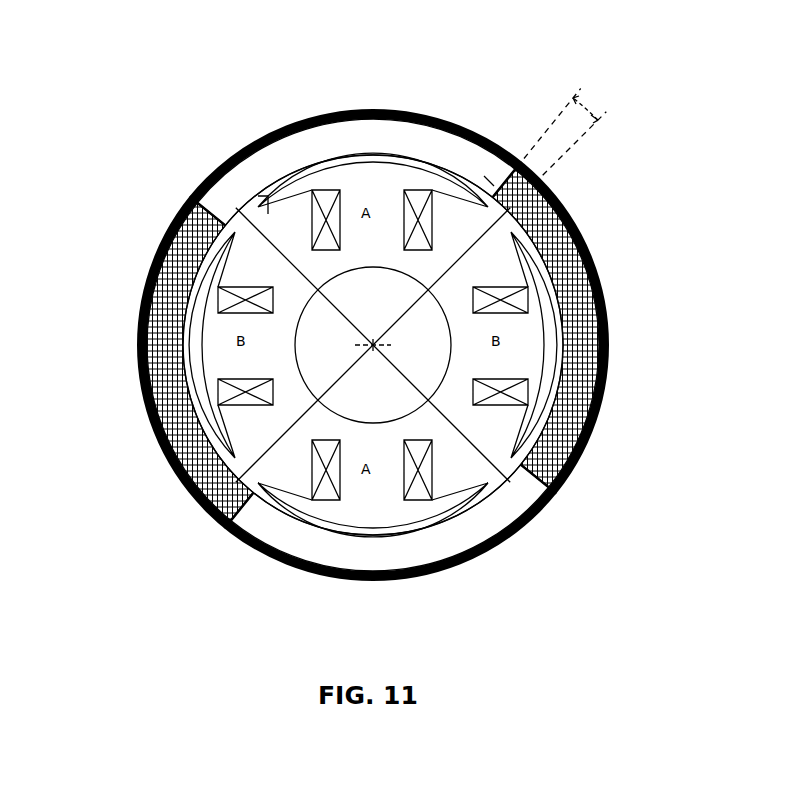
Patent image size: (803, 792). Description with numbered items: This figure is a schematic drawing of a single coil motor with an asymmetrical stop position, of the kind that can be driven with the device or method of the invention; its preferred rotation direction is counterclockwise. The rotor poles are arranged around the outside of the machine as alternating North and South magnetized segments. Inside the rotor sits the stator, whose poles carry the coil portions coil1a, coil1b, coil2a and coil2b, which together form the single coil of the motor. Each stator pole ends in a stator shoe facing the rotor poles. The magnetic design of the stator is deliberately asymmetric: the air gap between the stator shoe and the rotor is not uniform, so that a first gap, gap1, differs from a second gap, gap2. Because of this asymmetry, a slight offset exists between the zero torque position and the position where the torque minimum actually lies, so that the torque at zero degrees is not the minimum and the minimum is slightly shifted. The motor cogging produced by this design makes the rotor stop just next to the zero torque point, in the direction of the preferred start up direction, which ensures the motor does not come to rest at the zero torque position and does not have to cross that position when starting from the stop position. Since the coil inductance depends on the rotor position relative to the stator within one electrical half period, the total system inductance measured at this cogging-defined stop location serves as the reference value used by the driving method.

The element rotor poles is at (362, 357).
The north rotor pole North is at (313, 143).
The south rotor pole South is at (140, 335).
The first gap gap1 is at (250, 172).
The second gap gap2 is at (492, 171).
The element stator shoe is at (371, 183).
The coil 1a coil1a is at (421, 196).
The coil 1b coil1b is at (425, 470).
The coil 2a coil2a is at (238, 412).
The coil 2b coil2b is at (525, 293).
The element offset is at (588, 103).